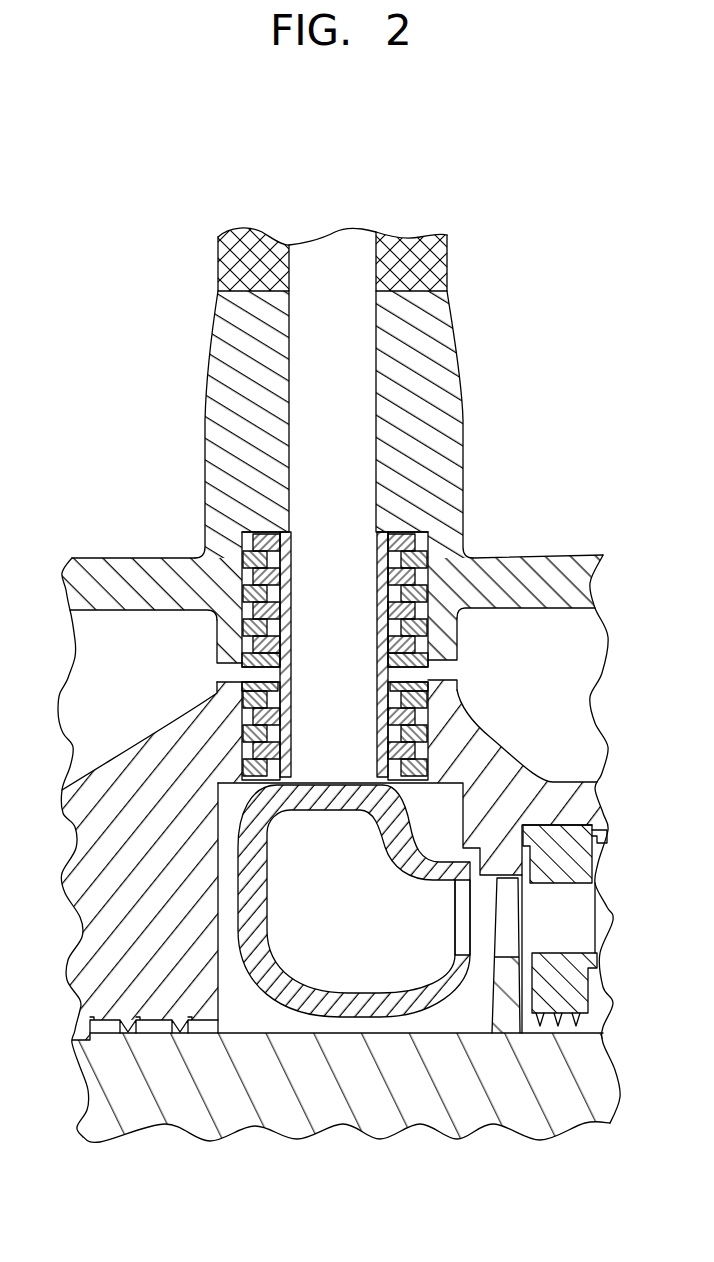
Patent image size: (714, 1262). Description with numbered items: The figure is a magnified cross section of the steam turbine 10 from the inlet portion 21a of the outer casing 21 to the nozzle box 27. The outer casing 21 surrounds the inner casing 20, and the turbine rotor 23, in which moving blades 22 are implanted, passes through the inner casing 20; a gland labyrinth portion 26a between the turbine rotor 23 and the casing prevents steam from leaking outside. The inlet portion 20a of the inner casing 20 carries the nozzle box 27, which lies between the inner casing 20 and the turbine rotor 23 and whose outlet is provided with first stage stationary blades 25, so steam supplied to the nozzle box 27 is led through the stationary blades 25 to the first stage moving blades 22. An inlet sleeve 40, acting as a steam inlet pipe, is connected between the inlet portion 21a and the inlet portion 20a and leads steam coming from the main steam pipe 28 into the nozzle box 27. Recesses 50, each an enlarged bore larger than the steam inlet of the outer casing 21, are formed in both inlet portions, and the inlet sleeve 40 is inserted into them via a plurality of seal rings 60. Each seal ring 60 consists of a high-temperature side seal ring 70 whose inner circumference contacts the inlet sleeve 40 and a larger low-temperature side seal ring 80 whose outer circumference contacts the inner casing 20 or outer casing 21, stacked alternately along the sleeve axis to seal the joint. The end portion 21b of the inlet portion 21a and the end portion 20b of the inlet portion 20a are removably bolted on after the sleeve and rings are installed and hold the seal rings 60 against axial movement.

The steam turbine 10 is at (543, 281).
The inner casing 20 is at (321, 851).
The inlet portion of the inner casing 20a is at (190, 701).
The end portion of the inlet portion of the inner casing 20b is at (240, 681).
The outer casing 21 is at (332, 478).
The inlet portion of the outer casing 21a is at (190, 421).
The end portion of the inlet portion of the outer casing 21b is at (240, 663).
The moving blades 22 is at (507, 887).
The turbine rotor 23 is at (467, 1128).
The stationary blades 25 is at (458, 935).
The gland labyrinth portion 26a is at (120, 1040).
The nozzle box 27 is at (345, 1003).
The main steam pipe 28 is at (234, 268).
The inlet sleeve 40 is at (285, 545).
The recesses 50 is at (241, 538).
The seal rings 60 is at (335, 655).
The high-temperature side seal ring 70 is at (268, 580).
The low-temperature side seal ring 80 is at (258, 595).